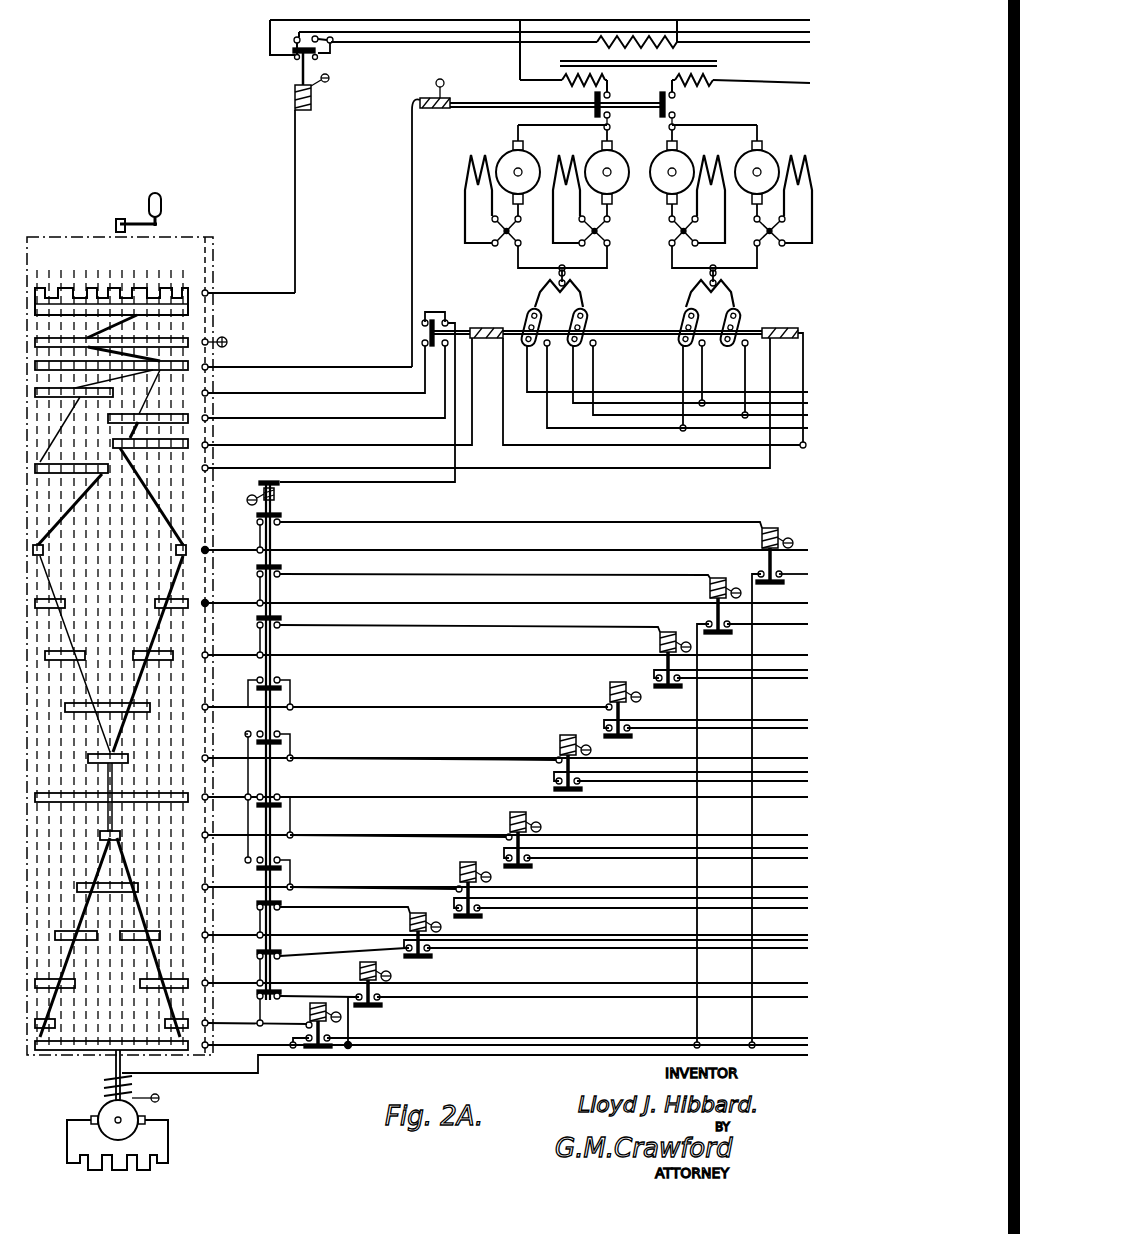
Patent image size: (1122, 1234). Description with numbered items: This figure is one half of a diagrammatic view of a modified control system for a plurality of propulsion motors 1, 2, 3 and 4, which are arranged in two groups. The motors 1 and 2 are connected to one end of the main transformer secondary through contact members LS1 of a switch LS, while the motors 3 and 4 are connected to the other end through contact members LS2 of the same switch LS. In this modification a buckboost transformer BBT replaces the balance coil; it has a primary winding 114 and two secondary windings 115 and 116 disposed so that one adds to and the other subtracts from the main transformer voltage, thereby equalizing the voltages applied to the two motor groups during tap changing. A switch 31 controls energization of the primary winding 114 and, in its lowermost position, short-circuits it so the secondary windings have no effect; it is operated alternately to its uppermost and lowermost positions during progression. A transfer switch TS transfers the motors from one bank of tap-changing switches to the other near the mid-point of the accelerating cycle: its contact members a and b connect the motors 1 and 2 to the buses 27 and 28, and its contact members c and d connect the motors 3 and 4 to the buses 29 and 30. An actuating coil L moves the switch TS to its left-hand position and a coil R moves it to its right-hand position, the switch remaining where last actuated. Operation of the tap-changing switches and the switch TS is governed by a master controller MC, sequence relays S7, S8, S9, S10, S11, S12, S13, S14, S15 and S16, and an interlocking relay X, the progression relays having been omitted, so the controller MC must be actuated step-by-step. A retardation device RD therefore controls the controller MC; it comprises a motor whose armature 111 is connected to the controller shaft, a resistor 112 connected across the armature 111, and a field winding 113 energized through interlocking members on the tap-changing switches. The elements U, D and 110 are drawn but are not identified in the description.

The up switch U is at (301, 37).
The down switch D is at (318, 58).
The switch 31 is at (280, 92).
The primary winding 114 is at (677, 44).
The secondary winding 115 is at (605, 80).
The secondary winding 116 is at (713, 80).
The buckboost transformer BBT is at (770, 57).
The switch LS is at (490, 91).
The contact members LS1 is at (595, 97).
The contact members LS2 is at (667, 108).
The motor 1 is at (493, 153).
The motor 2 is at (582, 153).
The motor 3 is at (655, 153).
The motor 4 is at (740, 153).
The transfer switch TS is at (598, 318).
The contact member a is at (535, 337).
The contact member b is at (581, 337).
The contact member c is at (691, 337).
The contact member d is at (733, 337).
The actuating coil L is at (486, 326).
The coil R is at (782, 326).
The bus 27 is at (667, 388).
The bus 28 is at (664, 393).
The bus 29 is at (590, 416).
The bus 30 is at (625, 434).
The master controller MC is at (125, 623).
The controller contact fingers 110 is at (209, 646).
The interlocking relay X is at (300, 506).
The sequence relay S7 is at (755, 550).
The sequence relay S8 is at (703, 600).
The sequence relay S9 is at (653, 653).
The sequence relay S10 is at (600, 703).
The sequence relay S11 is at (550, 756).
The sequence relay S12 is at (498, 832).
The sequence relay S13 is at (450, 882).
The sequence relay S14 is at (400, 933).
The sequence relay S15 is at (350, 981).
The sequence relay S16 is at (302, 1024).
The retardation device RD is at (128, 1116).
The field winding 113 is at (134, 1088).
The armature 111 is at (140, 1111).
The resistor 112 is at (160, 1168).